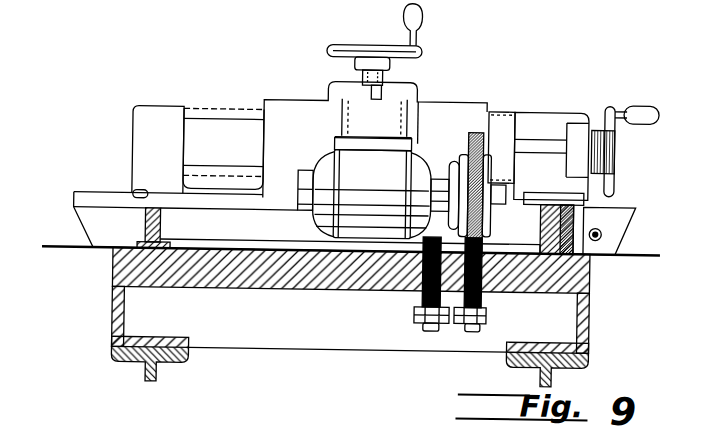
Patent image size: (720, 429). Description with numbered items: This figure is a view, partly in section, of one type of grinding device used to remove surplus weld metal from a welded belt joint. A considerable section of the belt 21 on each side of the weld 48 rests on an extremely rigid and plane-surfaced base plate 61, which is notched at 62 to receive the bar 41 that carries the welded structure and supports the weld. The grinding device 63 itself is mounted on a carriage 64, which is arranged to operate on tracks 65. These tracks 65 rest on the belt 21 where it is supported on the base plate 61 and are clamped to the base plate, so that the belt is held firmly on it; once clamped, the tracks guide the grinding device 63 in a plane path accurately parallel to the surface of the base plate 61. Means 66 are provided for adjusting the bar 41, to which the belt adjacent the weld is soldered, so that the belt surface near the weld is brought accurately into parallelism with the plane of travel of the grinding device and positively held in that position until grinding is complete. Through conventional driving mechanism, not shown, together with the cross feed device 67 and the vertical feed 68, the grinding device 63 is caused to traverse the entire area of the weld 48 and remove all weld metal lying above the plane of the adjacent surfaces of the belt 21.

The belt 21 is at (660, 254).
The bar 41 is at (488, 262).
The weld metal 48 is at (464, 251).
The base plate 61 is at (590, 283).
The notch 62 is at (400, 284).
The grinding device 63 is at (427, 145).
The carriage 64 is at (533, 112).
The tracks 65 is at (136, 193).
The adjusting means 66 is at (428, 331).
The cross feed device 67 is at (614, 150).
The vertical feed 68 is at (330, 48).